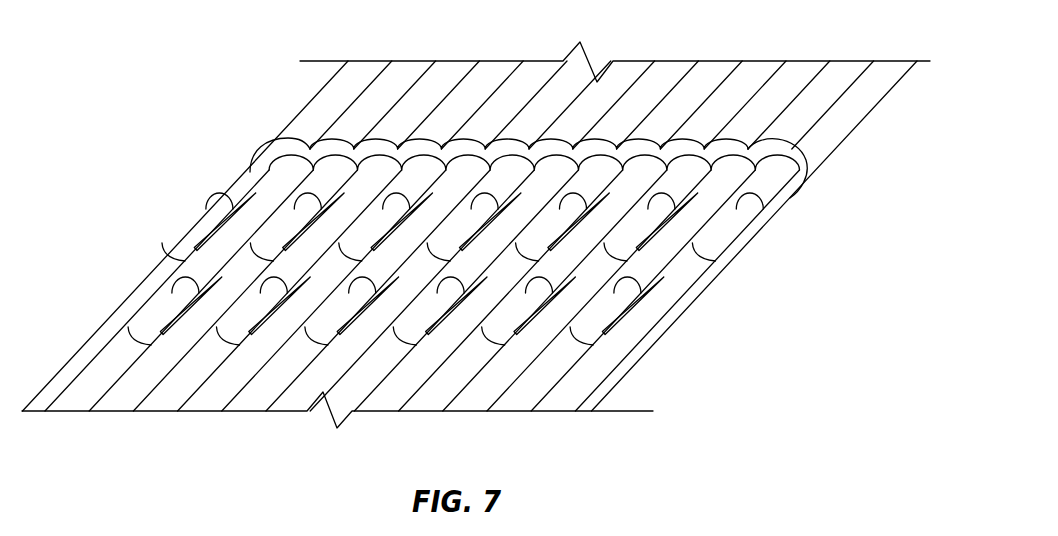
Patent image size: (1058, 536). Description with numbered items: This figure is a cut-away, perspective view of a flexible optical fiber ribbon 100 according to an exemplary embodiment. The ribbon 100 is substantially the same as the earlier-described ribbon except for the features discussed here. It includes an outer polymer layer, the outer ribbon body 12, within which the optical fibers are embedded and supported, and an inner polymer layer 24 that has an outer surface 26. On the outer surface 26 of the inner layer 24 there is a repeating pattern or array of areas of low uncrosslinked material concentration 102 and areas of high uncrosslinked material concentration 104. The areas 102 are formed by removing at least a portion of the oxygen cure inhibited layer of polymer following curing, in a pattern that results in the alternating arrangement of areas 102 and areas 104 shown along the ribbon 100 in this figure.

The outer ribbon body 12 is at (833, 97).
The inner polymer layer 24 is at (700, 297).
The outer surface 26 is at (760, 189).
The ribbon 100 is at (186, 150).
The areas of low uncrosslinked material concentration 102 is at (440, 384).
The areas of high uncrosslinked material concentration 104 is at (555, 222).